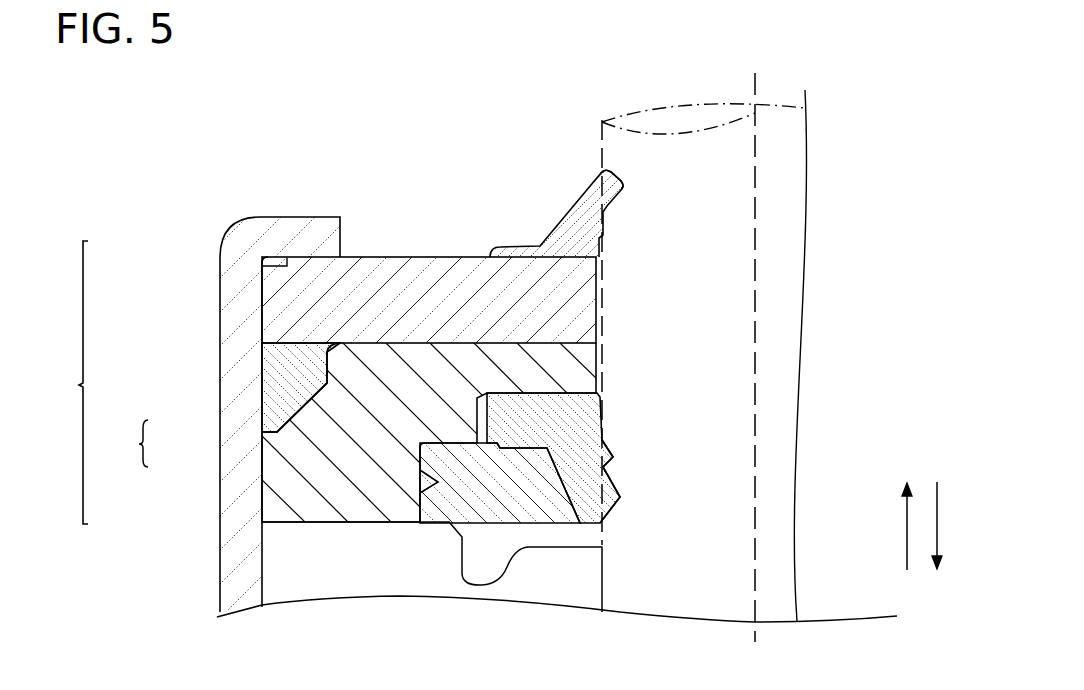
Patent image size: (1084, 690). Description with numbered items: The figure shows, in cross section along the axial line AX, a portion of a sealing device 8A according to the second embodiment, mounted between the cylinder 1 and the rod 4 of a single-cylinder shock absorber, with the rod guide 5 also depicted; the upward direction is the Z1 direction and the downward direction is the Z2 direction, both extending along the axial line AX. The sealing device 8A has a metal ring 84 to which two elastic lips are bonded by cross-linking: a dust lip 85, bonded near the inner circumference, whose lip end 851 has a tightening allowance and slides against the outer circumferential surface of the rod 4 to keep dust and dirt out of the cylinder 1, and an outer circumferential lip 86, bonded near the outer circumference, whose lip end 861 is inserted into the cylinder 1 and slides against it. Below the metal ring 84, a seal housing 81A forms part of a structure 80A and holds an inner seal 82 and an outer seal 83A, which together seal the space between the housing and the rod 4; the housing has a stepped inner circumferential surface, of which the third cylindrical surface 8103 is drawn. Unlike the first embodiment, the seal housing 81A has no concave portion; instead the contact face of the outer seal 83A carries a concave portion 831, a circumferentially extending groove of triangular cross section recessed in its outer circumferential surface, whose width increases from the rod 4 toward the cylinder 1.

The cylinder 1 is at (300, 217).
The rod 4 is at (604, 142).
The rod guide 5 is at (264, 580).
The sealing device 8A is at (65, 382).
The structure 80A is at (119, 443).
The seal housing 81A is at (264, 433).
The inner seal 82 is at (478, 412).
The outer seal 83A is at (419, 459).
The concave portion 831 is at (420, 492).
The metal ring 84 is at (264, 311).
The dust lip 85 is at (497, 251).
The lip end 851 is at (601, 172).
The outer circumferential lip 86 is at (264, 369).
The lip end 861 is at (282, 418).
The third cylindrical surface 8103 is at (420, 507).
The axial line AX is at (755, 339).
The Z1 direction Z1 is at (910, 514).
The Z2 direction Z2 is at (940, 541).